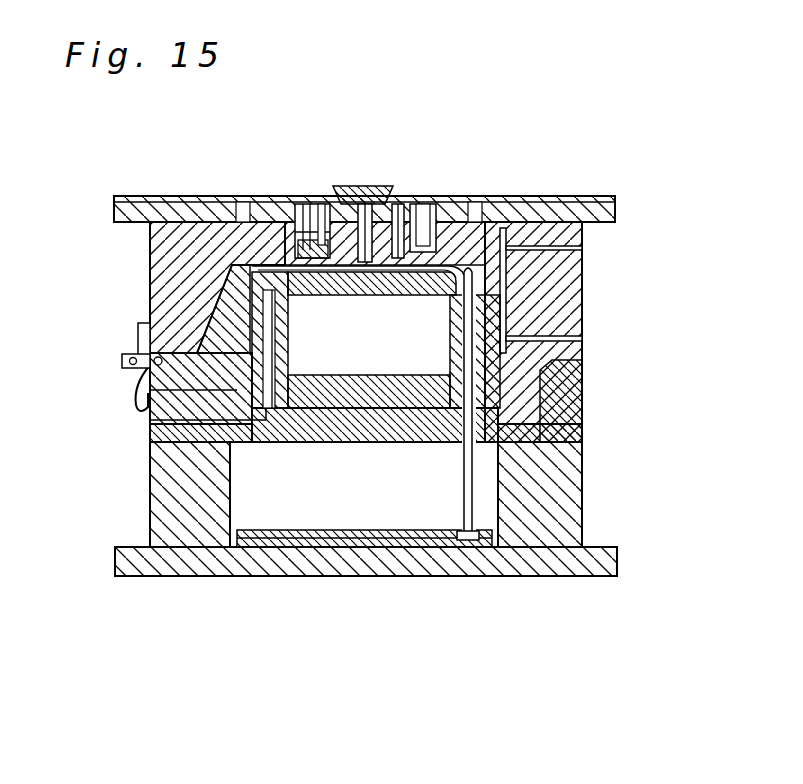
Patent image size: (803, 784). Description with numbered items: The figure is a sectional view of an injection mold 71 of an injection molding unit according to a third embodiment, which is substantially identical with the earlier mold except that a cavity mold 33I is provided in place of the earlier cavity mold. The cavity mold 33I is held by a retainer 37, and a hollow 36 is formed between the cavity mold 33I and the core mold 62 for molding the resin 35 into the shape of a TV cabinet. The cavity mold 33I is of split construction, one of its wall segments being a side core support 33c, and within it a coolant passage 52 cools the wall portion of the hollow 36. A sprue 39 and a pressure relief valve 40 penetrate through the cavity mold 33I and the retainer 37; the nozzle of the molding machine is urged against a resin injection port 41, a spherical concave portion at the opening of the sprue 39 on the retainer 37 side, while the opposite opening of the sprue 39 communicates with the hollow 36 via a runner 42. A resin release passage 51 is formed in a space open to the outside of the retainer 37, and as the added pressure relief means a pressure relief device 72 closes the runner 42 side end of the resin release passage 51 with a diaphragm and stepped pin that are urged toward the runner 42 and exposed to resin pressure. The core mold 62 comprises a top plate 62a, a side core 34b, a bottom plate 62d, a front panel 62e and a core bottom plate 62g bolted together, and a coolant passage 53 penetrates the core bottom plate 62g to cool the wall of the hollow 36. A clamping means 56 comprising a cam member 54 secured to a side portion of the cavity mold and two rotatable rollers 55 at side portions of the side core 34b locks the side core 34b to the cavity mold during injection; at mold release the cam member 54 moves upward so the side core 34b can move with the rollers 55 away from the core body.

The retainer 37 is at (605, 209).
The side core support 33c is at (150, 240).
The cavity mold 33I is at (603, 289).
The side core 34b is at (230, 298).
The resin 35 is at (232, 269).
The hollow 36 is at (250, 268).
The sprue 39 is at (388, 212).
The pressure relief valve 40 is at (420, 206).
The resin injection port 41 is at (366, 200).
The runner 42 is at (327, 207).
The resin release passage 51 is at (243, 200).
The coolant passage 52 is at (582, 247).
The coolant passage 53 is at (150, 422).
The cam member 54 is at (138, 330).
The rollers 55 is at (130, 372).
The clamping means 56 is at (106, 359).
The core mold 62 is at (376, 382).
The top plate 62a is at (440, 351).
The bottom plate 62d is at (284, 324).
The front panel 62e is at (366, 284).
The core bottom plate 62g is at (582, 415).
The injection mold 71 is at (609, 332).
The pressure relief device 72 is at (307, 210).